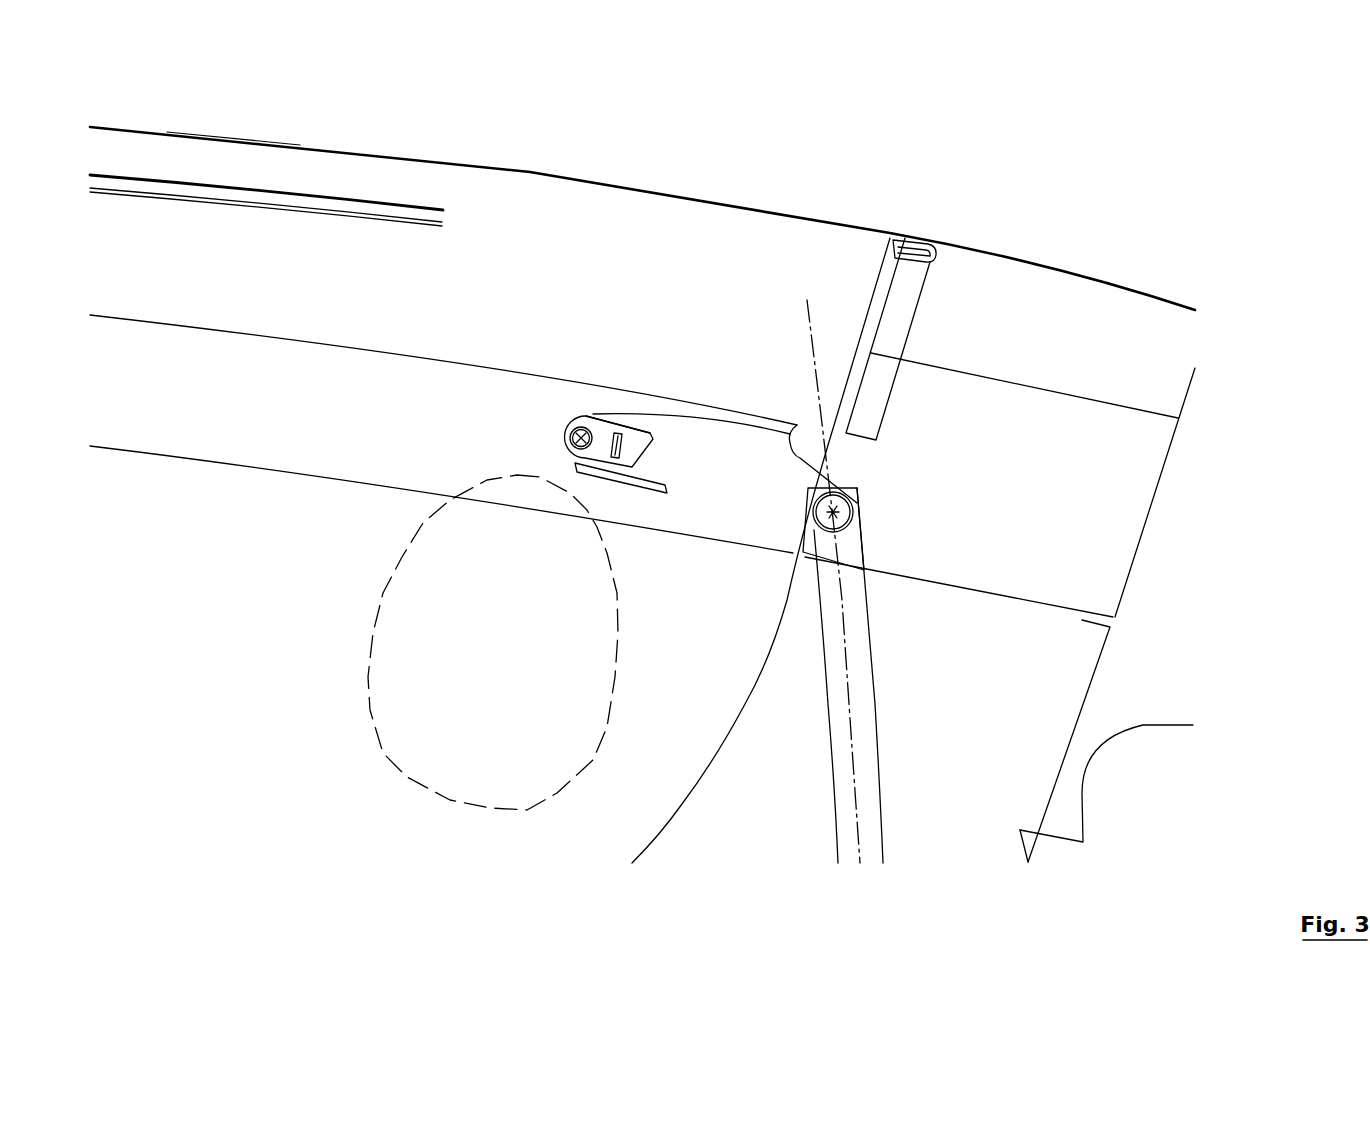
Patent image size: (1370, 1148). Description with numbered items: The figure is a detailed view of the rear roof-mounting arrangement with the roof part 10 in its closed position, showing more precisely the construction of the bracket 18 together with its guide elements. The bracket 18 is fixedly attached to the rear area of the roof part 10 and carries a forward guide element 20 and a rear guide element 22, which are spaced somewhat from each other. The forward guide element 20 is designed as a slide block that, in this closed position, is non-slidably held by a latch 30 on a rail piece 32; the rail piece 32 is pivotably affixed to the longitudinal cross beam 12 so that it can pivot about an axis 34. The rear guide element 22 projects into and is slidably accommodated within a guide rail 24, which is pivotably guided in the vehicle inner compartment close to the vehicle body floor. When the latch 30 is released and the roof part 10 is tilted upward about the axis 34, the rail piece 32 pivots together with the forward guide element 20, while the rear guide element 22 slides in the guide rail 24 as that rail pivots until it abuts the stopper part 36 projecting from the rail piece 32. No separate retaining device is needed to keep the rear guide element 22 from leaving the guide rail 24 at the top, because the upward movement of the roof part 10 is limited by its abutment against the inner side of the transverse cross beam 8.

The transverse cross beam 8 is at (1080, 310).
The roof part 10 is at (623, 253).
The longitudinal cross beam 12 is at (198, 420).
The bracket 18 is at (722, 443).
The forward guide element 20 is at (560, 440).
The rear guide element 22 is at (845, 508).
The guide rail 24 is at (876, 721).
The latch 30 is at (618, 432).
The rail piece 32 is at (621, 460).
The axis 34 is at (581, 430).
The stopper part 36 is at (657, 493).